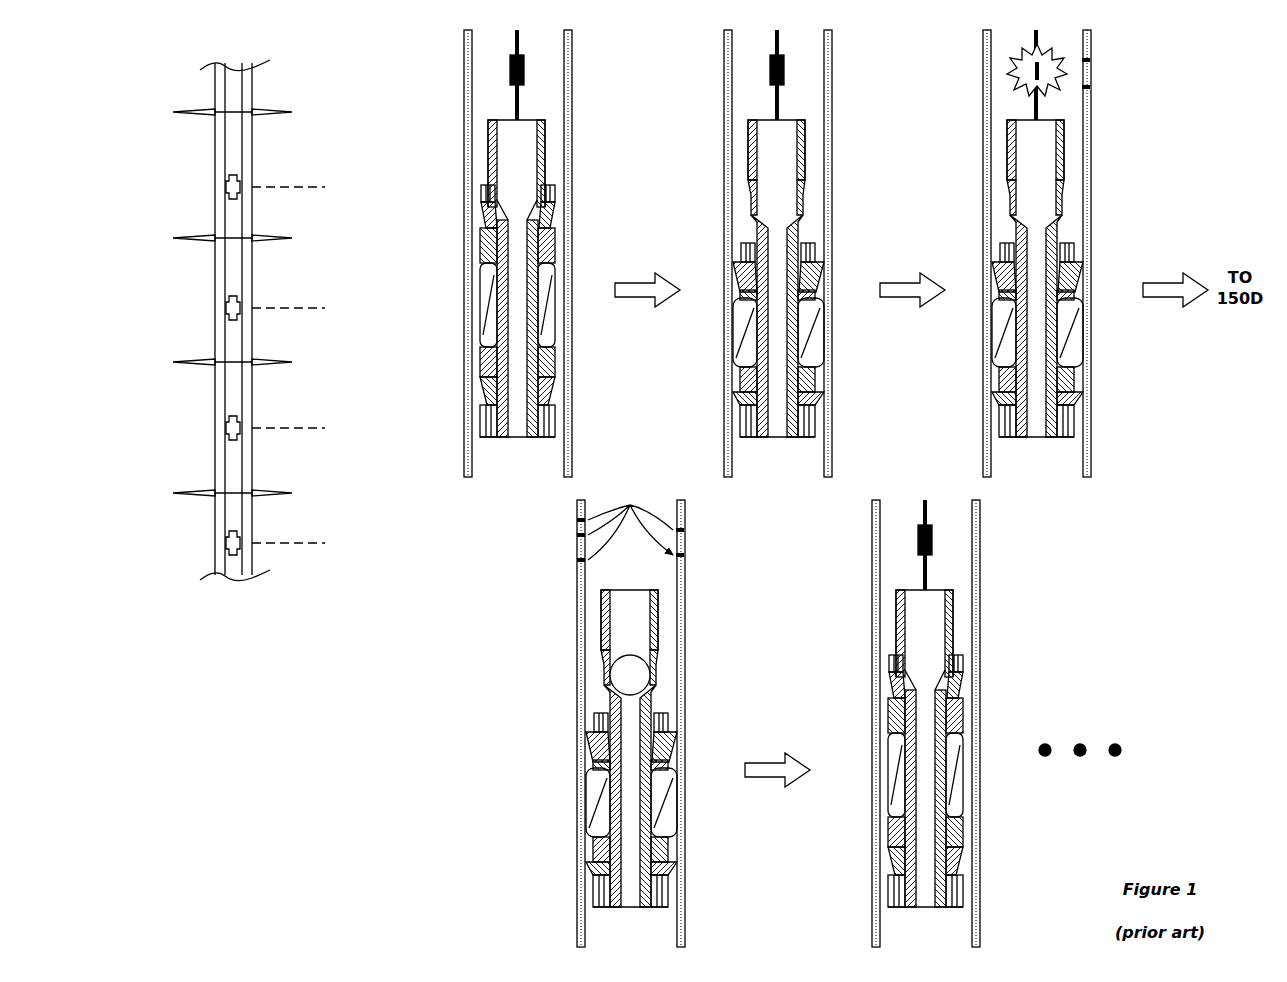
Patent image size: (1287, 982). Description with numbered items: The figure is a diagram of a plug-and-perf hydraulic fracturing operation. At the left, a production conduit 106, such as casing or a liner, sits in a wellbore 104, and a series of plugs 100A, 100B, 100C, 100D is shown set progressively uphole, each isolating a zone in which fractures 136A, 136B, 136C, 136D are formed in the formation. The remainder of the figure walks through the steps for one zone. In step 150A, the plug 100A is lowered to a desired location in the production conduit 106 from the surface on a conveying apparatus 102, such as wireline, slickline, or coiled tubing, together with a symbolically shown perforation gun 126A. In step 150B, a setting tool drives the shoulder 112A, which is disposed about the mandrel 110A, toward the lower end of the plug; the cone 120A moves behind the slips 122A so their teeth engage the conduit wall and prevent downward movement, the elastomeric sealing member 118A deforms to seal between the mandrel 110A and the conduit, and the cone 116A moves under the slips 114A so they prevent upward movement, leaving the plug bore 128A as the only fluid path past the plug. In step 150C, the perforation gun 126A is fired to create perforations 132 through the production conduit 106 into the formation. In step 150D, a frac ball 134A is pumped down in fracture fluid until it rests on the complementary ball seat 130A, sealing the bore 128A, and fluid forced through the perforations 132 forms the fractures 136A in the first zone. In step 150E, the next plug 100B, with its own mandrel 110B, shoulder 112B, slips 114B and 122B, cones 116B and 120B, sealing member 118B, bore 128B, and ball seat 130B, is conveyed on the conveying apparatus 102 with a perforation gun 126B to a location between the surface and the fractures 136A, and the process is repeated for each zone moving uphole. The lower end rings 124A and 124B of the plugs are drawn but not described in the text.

The conveying apparatus 102 is at (512, 112).
The wellbore 104 is at (252, 85).
The production conduit 106 is at (222, 92).
The plug 100A is at (226, 543).
The plug 100B is at (226, 428).
The plug 100C is at (226, 308).
The plug 100D is at (226, 187).
The mandrel 110A is at (545, 145).
The mandrel 110B is at (953, 615).
The shoulder 112A is at (556, 192).
The shoulder 112B is at (964, 662).
The slips 114A is at (553, 215).
The slips 114B is at (961, 688).
The cone 116A is at (556, 250).
The cone 116B is at (964, 720).
The sealing member 118A is at (556, 310).
The sealing member 118B is at (964, 780).
The cone 120A is at (556, 353).
The cone 120B is at (964, 825).
The slips 122A is at (556, 392).
The slips 122B is at (964, 863).
The bottom ring 124A is at (556, 425).
The bottom ring 124B is at (964, 895).
The perforation gun 126A is at (510, 70).
The perforation gun 126B is at (918, 542).
The plug bore 128A is at (514, 292).
The plug bore 128B is at (920, 762).
The ball seat 130A is at (490, 222).
The ball seat 130B is at (898, 692).
The perforations 132 is at (1090, 87).
The frac ball 134A is at (640, 670).
The fractures 136A is at (268, 490).
The fractures 136B is at (265, 366).
The fractures 136C is at (265, 242).
The fractures 136D is at (262, 117).
The step 150A is at (519, 467).
The step 150B is at (780, 467).
The step 150C is at (1036, 467).
The step 150D is at (630, 937).
The step 150E is at (925, 937).